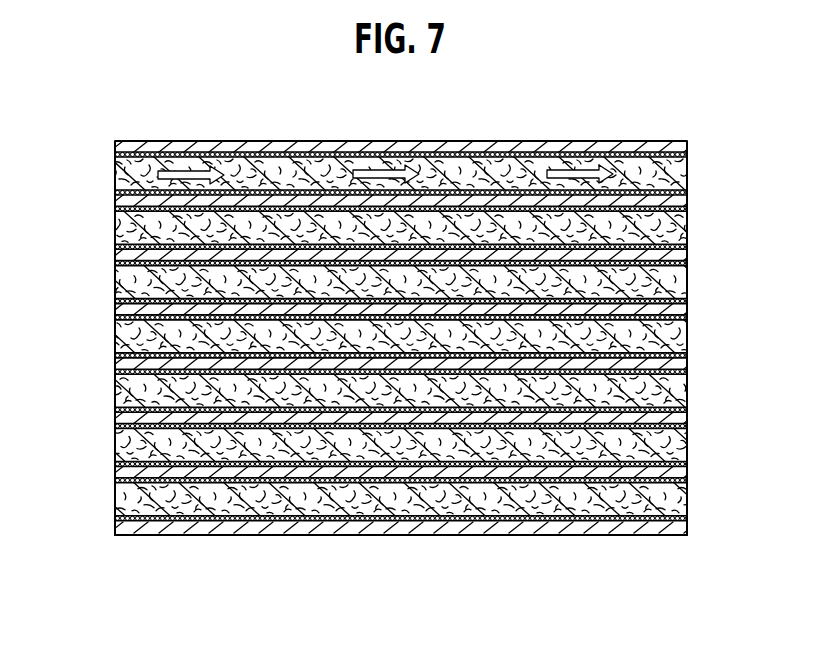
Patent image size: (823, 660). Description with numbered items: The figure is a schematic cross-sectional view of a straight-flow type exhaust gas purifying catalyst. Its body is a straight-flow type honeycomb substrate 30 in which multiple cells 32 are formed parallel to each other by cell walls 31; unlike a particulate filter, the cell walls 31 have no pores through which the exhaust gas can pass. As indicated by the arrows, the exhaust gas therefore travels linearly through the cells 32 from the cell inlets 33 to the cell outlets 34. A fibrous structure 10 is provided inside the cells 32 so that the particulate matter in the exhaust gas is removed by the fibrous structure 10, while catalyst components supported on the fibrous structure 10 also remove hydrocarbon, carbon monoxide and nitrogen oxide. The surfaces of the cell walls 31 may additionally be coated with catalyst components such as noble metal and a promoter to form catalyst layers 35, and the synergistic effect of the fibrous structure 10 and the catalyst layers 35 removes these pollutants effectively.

The fibrous structure 10 is at (114, 333).
The honeycomb substrate 30 is at (442, 537).
The cell walls 31 is at (481, 141).
The cells 32 is at (320, 228).
The cell inlets 33 is at (426, 301).
The cell outlets 34 is at (688, 175).
The catalyst layers 35 is at (617, 152).